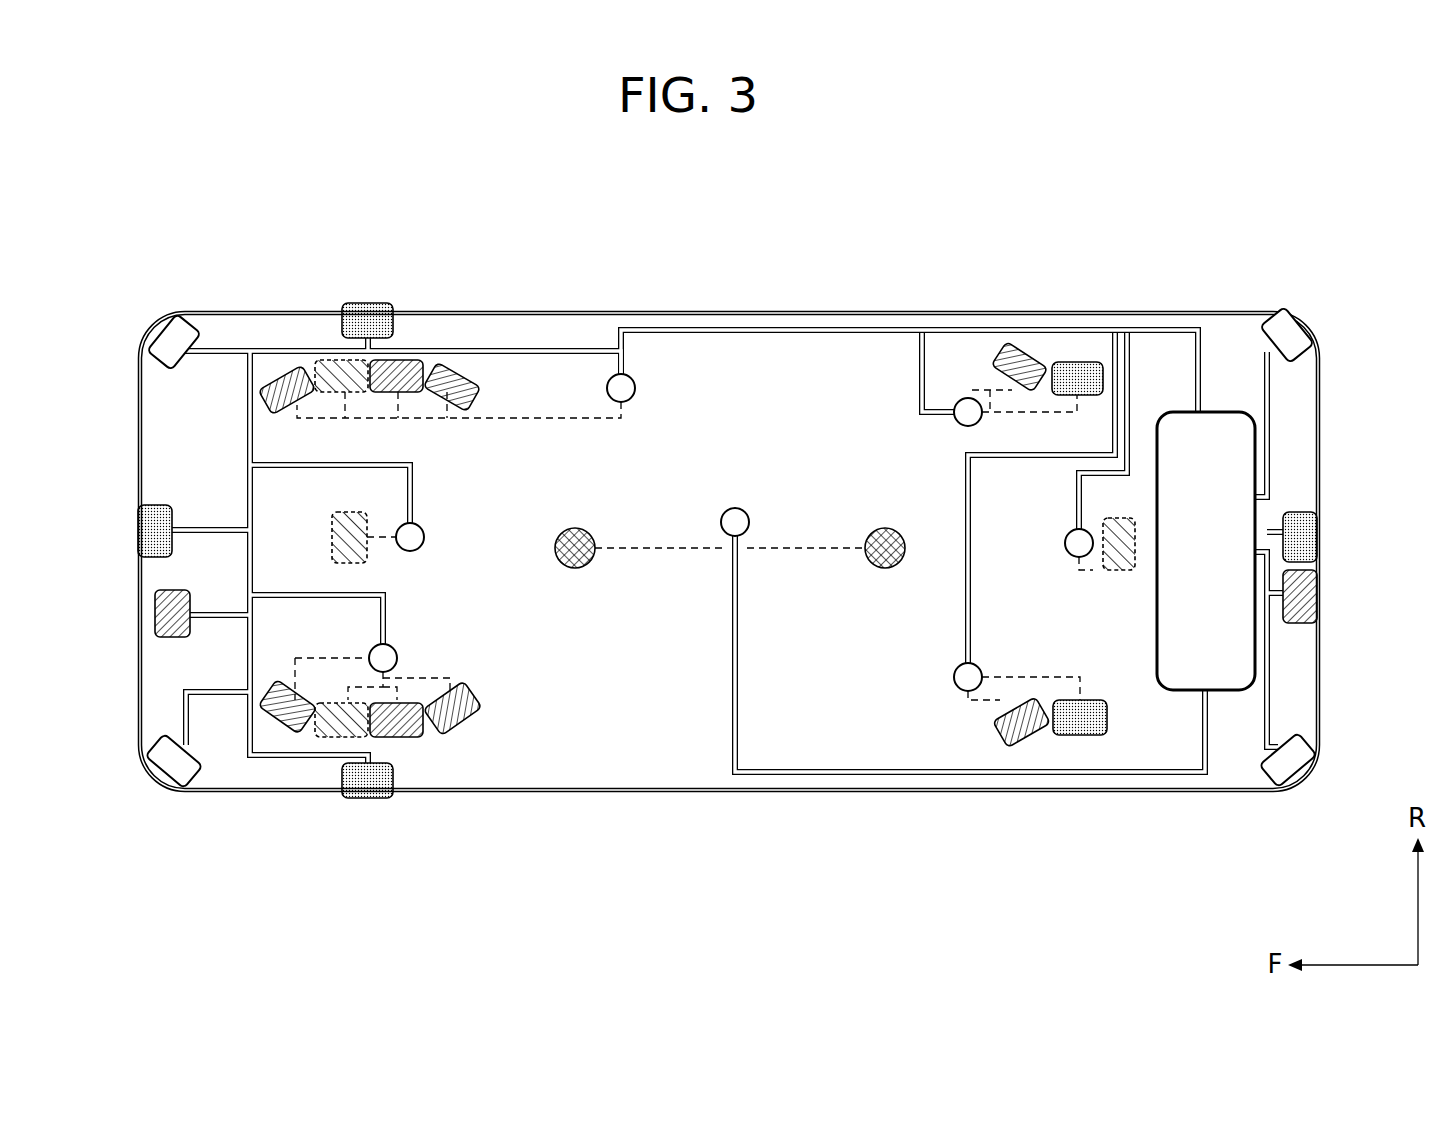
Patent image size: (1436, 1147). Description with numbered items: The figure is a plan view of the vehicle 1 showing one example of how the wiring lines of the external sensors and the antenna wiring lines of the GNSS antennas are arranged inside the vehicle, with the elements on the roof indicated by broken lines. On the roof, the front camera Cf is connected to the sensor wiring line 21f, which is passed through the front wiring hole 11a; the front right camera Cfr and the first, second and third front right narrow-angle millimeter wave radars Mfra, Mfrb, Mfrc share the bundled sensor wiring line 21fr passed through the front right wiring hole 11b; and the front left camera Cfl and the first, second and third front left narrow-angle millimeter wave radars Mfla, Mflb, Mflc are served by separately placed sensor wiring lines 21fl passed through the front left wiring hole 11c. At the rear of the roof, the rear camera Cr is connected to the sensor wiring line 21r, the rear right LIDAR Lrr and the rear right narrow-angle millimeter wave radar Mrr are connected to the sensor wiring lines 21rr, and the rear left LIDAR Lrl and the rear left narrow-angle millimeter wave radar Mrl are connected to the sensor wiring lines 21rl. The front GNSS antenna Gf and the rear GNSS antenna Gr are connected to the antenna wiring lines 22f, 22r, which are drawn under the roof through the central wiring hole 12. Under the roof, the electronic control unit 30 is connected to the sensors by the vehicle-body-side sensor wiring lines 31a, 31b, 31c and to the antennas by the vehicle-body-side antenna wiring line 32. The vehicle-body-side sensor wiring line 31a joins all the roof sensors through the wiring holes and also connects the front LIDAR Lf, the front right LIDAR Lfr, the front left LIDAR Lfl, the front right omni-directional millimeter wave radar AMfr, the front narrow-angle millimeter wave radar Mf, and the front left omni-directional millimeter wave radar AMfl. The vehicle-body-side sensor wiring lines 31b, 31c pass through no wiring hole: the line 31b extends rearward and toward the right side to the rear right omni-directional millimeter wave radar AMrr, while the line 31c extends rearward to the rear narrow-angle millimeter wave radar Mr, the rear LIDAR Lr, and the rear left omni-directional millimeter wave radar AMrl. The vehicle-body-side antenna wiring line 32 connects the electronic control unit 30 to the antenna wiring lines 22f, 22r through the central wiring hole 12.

The vehicle 1 is at (1246, 209).
The front wiring hole 11a is at (422, 527).
The front right wiring hole 11b is at (632, 400).
The front left wiring hole 11c is at (393, 647).
The central wiring hole 12 is at (745, 510).
The sensor wiring line 21f is at (375, 530).
The sensor wiring lines 21fl is at (357, 677).
The sensor wiring line 21fr is at (513, 418).
The sensor wiring line 21r is at (1080, 575).
The sensor wiring lines 21rl is at (1040, 677).
The sensor wiring lines 21rr is at (1050, 418).
The antenna wiring line 22f is at (683, 555).
The antenna wiring line 22r is at (810, 555).
The electronic control unit 30 is at (1255, 452).
The vehicle-body-side sensor wiring line 31a is at (805, 327).
The vehicle-body-side sensor wiring line 31b is at (1272, 375).
The vehicle-body-side sensor wiring line 31c is at (1272, 682).
The vehicle-body-side antenna wiring line 32 is at (823, 778).
The front right omni-directional millimeter wave radar AMfr is at (158, 322).
The front left omni-directional millimeter wave radar AMfl is at (158, 780).
The rear right omni-directional millimeter wave radar AMrr is at (1302, 322).
The rear left omni-directional millimeter wave radar AMrl is at (1298, 780).
The front camera Cf is at (332, 540).
The front right camera Cfr is at (333, 360).
The front left camera Cfl is at (340, 737).
The rear camera Cr is at (1125, 575).
The front GNSS antenna Gf is at (590, 565).
The rear GNSS antenna Gr is at (900, 565).
The front LIDAR Lf is at (138, 533).
The front right LIDAR Lfr is at (368, 303).
The front left LIDAR Lfl is at (368, 798).
The rear LIDAR Lr is at (1320, 533).
The rear right LIDAR Lrr is at (1080, 362).
The rear left LIDAR Lrl is at (1090, 735).
The front narrow-angle millimeter wave radar Mf is at (155, 615).
The first front right narrow-angle millimeter wave radar Mfra is at (286, 376).
The second front right narrow-angle millimeter wave radar Mfrb is at (415, 360).
The third front right narrow-angle millimeter wave radar Mfrc is at (458, 375).
The first front left narrow-angle millimeter wave radar Mfla is at (288, 728).
The second front left narrow-angle millimeter wave radar Mflb is at (400, 737).
The third front left narrow-angle millimeter wave radar Mflc is at (455, 725).
The rear narrow-angle millimeter wave radar Mr is at (1320, 597).
The rear right narrow-angle millimeter wave radar Mrr is at (1025, 353).
The rear left narrow-angle millimeter wave radar Mrl is at (1033, 745).